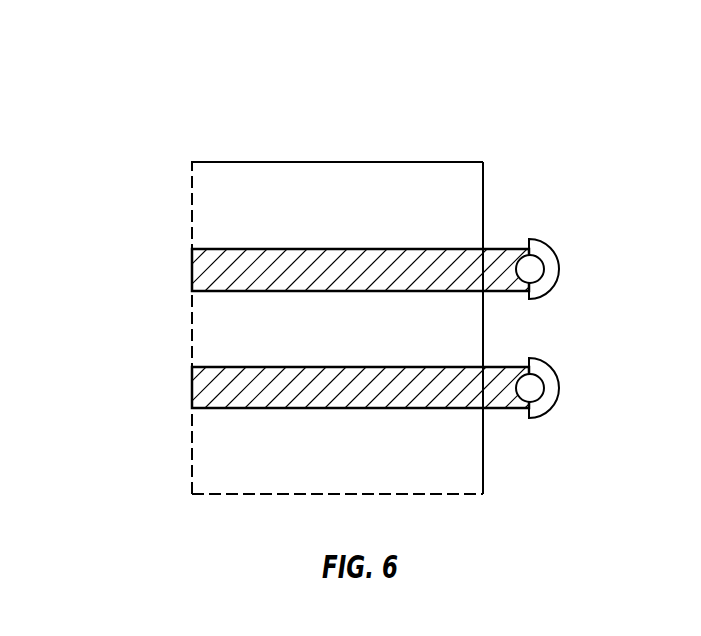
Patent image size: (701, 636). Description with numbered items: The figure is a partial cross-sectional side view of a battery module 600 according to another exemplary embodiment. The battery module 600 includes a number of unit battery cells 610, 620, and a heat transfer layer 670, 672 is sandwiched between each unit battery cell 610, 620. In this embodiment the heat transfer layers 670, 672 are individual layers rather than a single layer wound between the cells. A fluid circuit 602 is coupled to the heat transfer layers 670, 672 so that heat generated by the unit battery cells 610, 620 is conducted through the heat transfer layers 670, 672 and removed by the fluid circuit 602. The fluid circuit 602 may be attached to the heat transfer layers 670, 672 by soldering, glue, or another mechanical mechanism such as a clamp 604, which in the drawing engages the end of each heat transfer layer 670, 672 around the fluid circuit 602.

The battery module 600 is at (138, 78).
The unit battery cell 610 is at (200, 210).
The unit battery cell 620 is at (200, 325).
The heat transfer layer 670 is at (197, 267).
The heat transfer layer 672 is at (197, 385).
The fluid circuit 602 is at (534, 268).
The clamp 604 is at (537, 238).